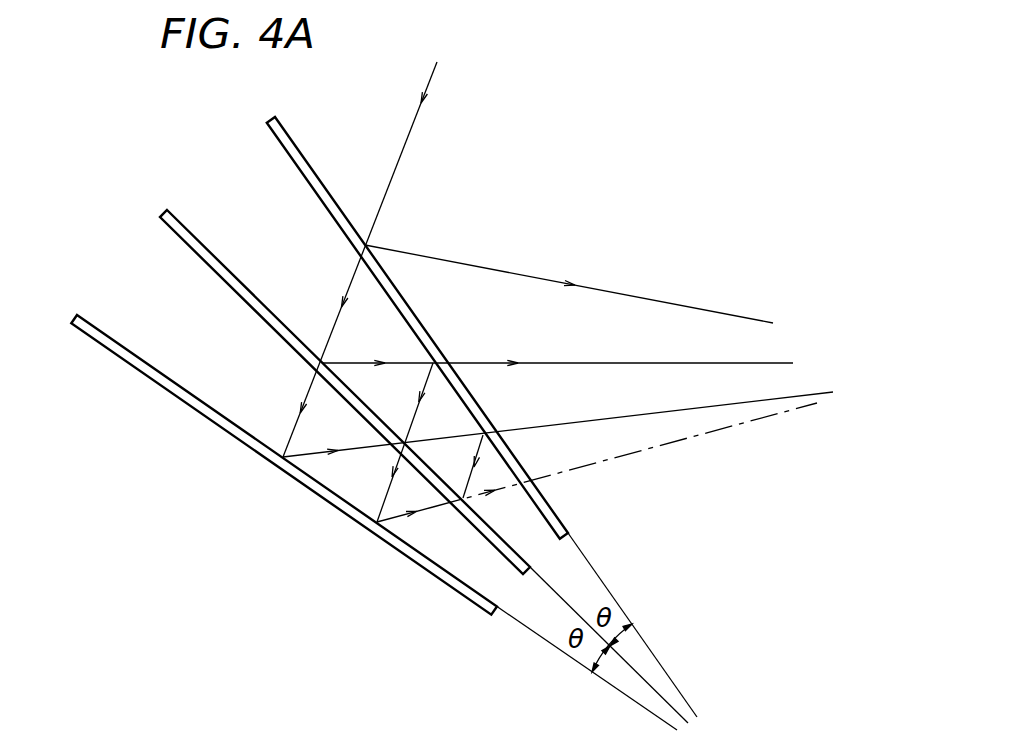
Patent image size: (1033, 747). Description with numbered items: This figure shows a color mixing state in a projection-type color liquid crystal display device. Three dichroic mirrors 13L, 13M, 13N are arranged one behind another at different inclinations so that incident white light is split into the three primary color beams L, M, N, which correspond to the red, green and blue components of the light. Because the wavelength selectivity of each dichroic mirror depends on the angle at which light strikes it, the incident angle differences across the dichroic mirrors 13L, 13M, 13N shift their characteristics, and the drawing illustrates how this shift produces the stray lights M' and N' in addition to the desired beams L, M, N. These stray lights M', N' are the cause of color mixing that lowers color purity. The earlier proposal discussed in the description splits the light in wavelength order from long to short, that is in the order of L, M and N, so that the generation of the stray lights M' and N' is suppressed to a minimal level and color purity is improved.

The dichroic mirror 13L is at (268, 118).
The dichroic mirror 13M is at (158, 212).
The dichroic mirror 13N is at (72, 323).
The split beam L is at (647, 298).
The split beam M is at (557, 349).
The split beam N is at (567, 395).
The stray light M' is at (598, 402).
The stray light N' is at (597, 462).